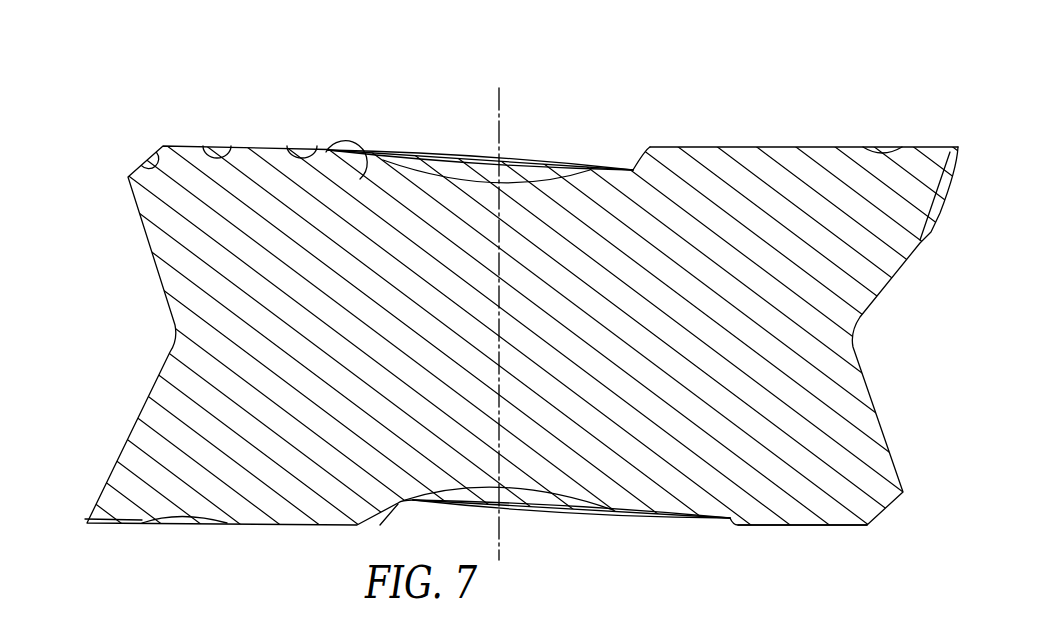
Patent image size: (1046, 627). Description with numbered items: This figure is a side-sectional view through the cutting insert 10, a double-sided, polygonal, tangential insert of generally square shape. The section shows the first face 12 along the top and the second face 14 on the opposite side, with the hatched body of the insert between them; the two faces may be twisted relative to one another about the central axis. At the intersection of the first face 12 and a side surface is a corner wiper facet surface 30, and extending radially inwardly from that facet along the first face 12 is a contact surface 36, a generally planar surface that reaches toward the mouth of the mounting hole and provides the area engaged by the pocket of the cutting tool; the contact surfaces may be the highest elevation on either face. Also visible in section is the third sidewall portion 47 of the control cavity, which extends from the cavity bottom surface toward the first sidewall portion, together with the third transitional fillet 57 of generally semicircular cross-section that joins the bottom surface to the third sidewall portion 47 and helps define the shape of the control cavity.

The cutting insert 10 is at (135, 82).
The first face 12 is at (743, 120).
The second face 14 is at (780, 550).
The corner wiper facet surface 30 is at (158, 160).
The contact surface 36 is at (232, 143).
The third sidewall portion 47 is at (287, 143).
The third transitional fillet 57 is at (360, 179).